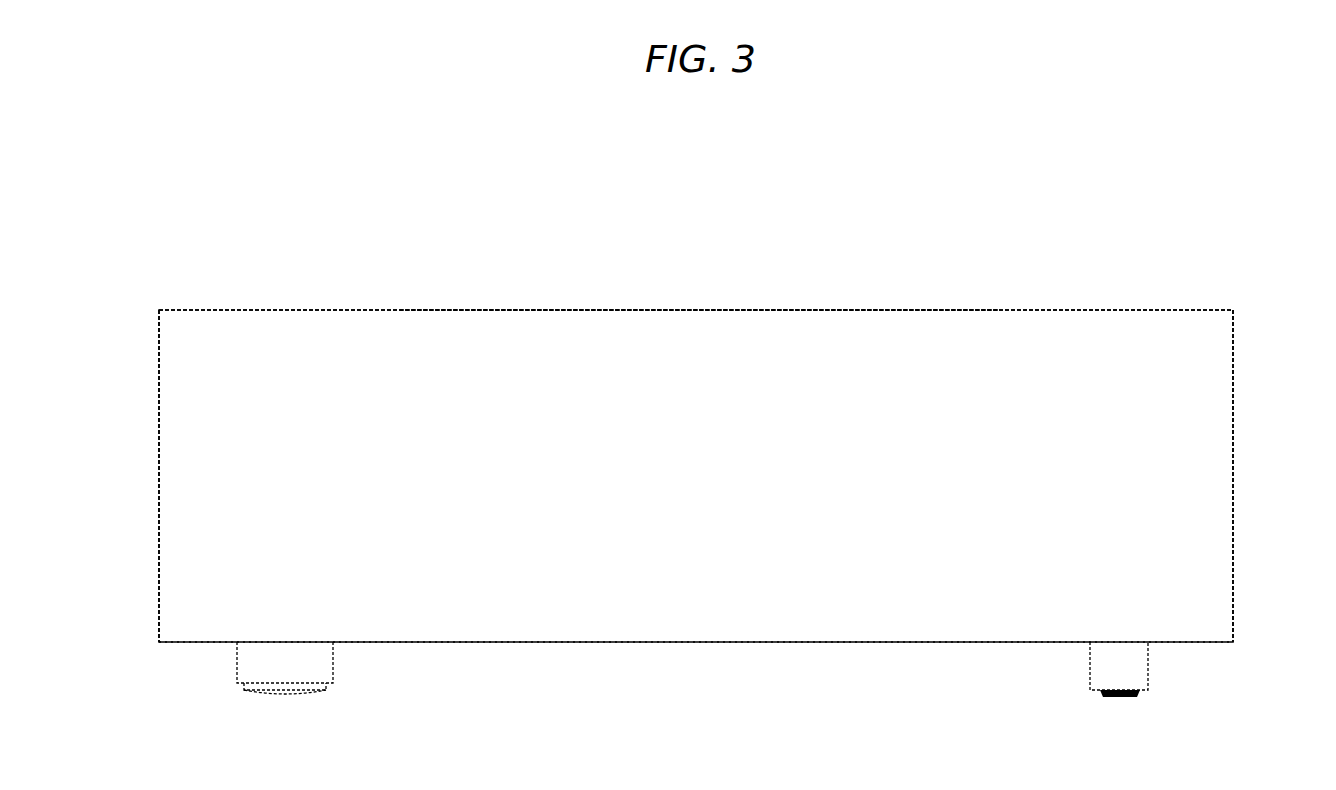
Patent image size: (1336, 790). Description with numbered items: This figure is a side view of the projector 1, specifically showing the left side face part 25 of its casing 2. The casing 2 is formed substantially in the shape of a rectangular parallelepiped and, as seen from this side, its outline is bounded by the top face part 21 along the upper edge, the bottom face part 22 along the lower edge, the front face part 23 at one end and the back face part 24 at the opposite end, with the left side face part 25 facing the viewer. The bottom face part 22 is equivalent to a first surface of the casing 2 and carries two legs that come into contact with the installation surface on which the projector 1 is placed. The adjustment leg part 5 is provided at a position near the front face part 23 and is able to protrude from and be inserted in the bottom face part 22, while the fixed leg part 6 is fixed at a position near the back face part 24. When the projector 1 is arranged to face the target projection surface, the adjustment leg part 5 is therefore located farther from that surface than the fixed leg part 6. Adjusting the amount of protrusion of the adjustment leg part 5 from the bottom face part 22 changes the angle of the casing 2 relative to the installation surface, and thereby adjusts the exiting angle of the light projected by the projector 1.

The projector 1 is at (1232, 152).
The casing 2 is at (1215, 310).
The top face part 21 is at (1110, 310).
The bottom face part 22 is at (793, 642).
The front face part 23 is at (1233, 470).
The back face part 24 is at (160, 483).
The left side face part 25 is at (768, 331).
The adjustment leg part 5 is at (1148, 667).
The fixed leg part 6 is at (333, 667).